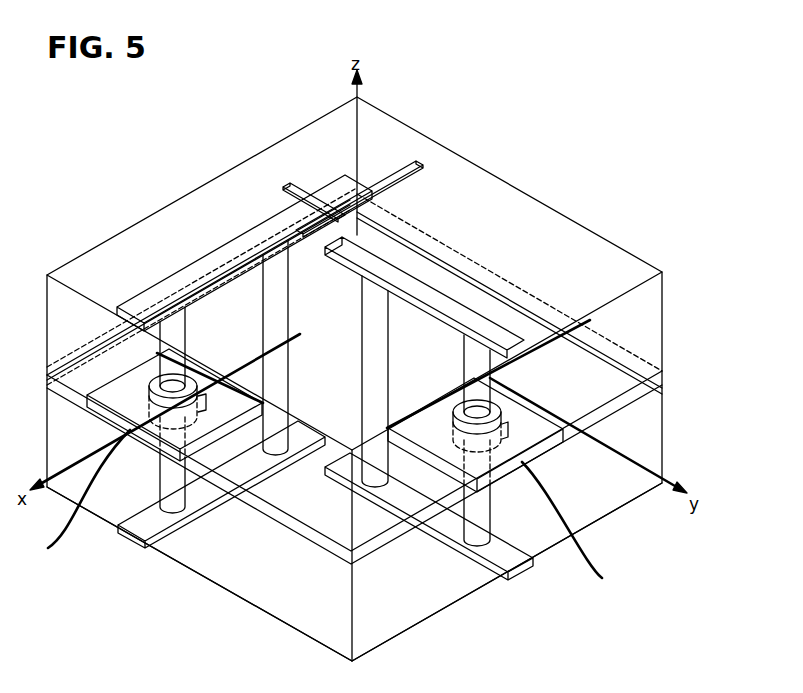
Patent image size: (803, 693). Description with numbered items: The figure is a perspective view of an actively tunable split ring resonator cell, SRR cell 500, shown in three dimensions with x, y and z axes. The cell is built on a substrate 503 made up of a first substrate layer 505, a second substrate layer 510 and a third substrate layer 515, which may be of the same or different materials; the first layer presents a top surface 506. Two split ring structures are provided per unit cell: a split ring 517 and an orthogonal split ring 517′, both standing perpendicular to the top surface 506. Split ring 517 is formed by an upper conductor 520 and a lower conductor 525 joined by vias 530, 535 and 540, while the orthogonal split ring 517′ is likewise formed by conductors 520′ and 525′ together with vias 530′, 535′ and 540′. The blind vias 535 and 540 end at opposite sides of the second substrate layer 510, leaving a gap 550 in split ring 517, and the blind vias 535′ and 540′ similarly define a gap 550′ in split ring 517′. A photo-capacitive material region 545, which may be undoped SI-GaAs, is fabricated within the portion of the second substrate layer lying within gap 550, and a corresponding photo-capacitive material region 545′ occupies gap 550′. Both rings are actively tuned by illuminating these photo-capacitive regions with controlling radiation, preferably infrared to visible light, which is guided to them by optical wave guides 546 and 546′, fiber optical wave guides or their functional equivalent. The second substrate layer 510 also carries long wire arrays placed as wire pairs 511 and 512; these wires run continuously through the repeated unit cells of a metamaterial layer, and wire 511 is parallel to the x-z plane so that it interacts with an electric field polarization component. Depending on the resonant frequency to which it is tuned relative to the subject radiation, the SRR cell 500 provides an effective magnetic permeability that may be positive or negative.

The SRR cell 500 is at (435, 66).
The substrate 503 is at (729, 290).
The first substrate layer 505 is at (657, 308).
The top surface 506 is at (623, 254).
The second substrate layer 510 is at (657, 377).
The third substrate layer 515 is at (657, 447).
The wire 511 is at (390, 192).
The wire 512 is at (311, 195).
The split ring 517 is at (203, 234).
The orthogonal split ring 517′ is at (484, 249).
The conductor 520 is at (250, 240).
The conductor 520′ is at (407, 272).
The conductor 525 is at (163, 533).
The conductor 525′ is at (480, 567).
The via 530 is at (286, 272).
The via 530′ is at (367, 378).
The blind via 535 is at (181, 326).
The blind via 535′ is at (470, 348).
The blind via 540 is at (180, 503).
The blind via 540′ is at (466, 536).
The photo-capacitive material region 545 is at (99, 416).
The photo-capacitive material region 545′ is at (557, 445).
The optical wave guide 546 is at (58, 543).
The optical wave guide 546′ is at (588, 562).
The gap 550 is at (200, 397).
The gap 550′ is at (509, 426).